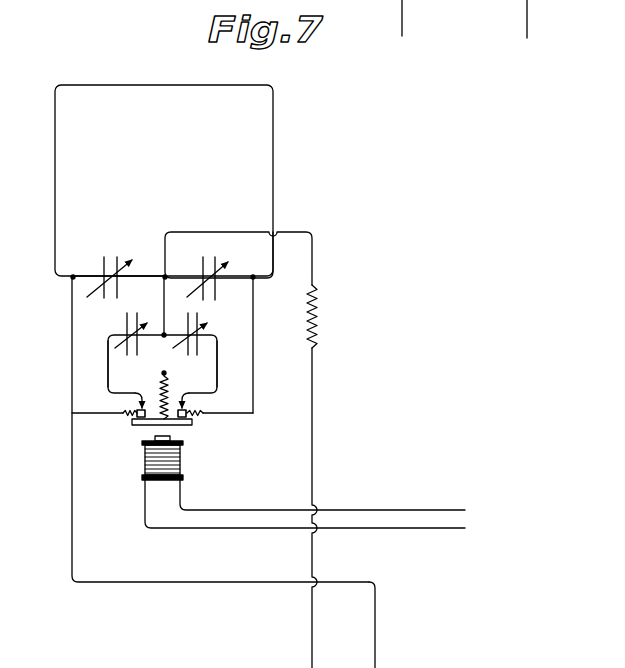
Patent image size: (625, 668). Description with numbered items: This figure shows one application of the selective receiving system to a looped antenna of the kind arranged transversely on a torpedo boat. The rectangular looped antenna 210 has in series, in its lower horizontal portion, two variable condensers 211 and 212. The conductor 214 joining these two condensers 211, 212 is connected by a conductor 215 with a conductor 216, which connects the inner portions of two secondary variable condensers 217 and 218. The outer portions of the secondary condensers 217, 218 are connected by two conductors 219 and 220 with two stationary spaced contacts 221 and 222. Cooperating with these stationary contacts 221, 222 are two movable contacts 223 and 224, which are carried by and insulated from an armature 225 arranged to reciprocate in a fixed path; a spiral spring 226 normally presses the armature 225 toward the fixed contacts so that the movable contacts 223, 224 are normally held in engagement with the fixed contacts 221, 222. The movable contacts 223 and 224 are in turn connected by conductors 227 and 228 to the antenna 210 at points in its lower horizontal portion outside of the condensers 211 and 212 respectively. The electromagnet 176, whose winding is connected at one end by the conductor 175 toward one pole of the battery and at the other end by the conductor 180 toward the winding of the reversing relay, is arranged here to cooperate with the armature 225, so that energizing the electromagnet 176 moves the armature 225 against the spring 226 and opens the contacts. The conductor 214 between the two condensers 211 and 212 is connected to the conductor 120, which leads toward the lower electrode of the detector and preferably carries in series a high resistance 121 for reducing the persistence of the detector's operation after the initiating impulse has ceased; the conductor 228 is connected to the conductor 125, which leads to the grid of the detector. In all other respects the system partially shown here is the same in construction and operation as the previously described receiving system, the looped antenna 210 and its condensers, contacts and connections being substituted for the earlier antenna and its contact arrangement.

The looped antenna 210 is at (55, 157).
The variable condenser 211 is at (238, 266).
The variable condenser 212 is at (104, 257).
The conductor 214 is at (143, 276).
The conductor 215 is at (164, 297).
The conductor 216 is at (186, 340).
The secondary variable condenser 217 is at (207, 323).
The secondary variable condenser 218 is at (127, 320).
The conductor 219 is at (217, 352).
The conductor 220 is at (108, 345).
The stationary contact 221 is at (182, 404).
The stationary contact 222 is at (142, 402).
The movable contact 223 is at (187, 412).
The movable contact 224 is at (136, 410).
The armature 225 is at (192, 424).
The spiral spring 226 is at (167, 385).
The conductor 227 is at (253, 385).
The conductor 228 is at (71, 384).
The electromagnet 176 is at (142, 460).
The conductor 120 is at (312, 264).
The high resistance 121 is at (317, 326).
The conductor 180 is at (256, 504).
The conductor 175 is at (256, 529).
The conductor 125 is at (156, 582).